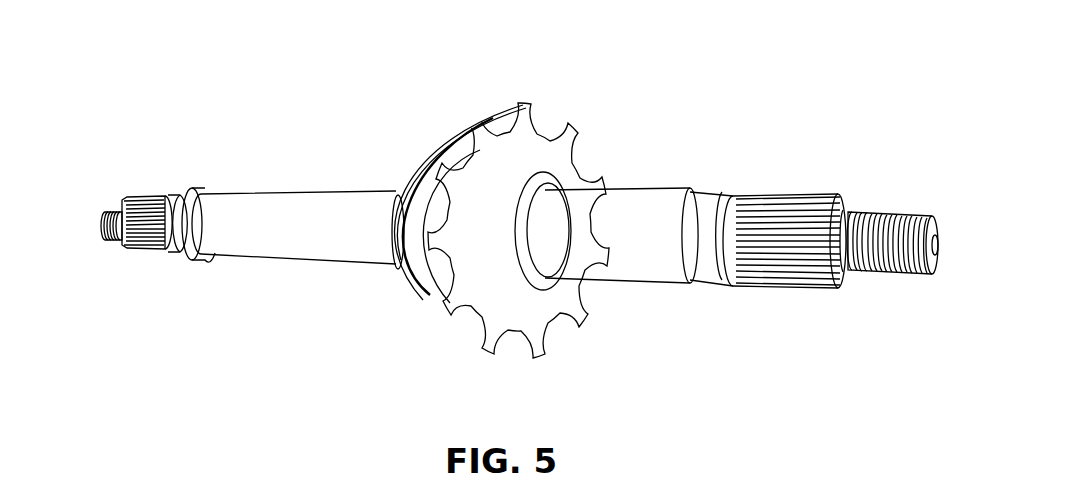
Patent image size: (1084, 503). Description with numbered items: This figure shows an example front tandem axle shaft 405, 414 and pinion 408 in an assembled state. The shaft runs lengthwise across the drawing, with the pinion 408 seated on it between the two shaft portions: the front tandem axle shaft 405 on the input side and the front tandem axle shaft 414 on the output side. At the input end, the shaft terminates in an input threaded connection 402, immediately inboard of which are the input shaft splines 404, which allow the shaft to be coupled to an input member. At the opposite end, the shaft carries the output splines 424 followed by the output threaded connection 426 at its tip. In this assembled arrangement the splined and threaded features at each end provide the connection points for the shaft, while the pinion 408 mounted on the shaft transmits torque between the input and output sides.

The input threaded connection 402 is at (100, 203).
The input shaft splines 404 is at (146, 186).
The front tandem axle shaft 405 is at (317, 190).
The pinion 408 is at (478, 126).
The front tandem axle shaft 414 is at (615, 195).
The output splines 424 is at (781, 202).
The output threaded connection 426 is at (888, 228).